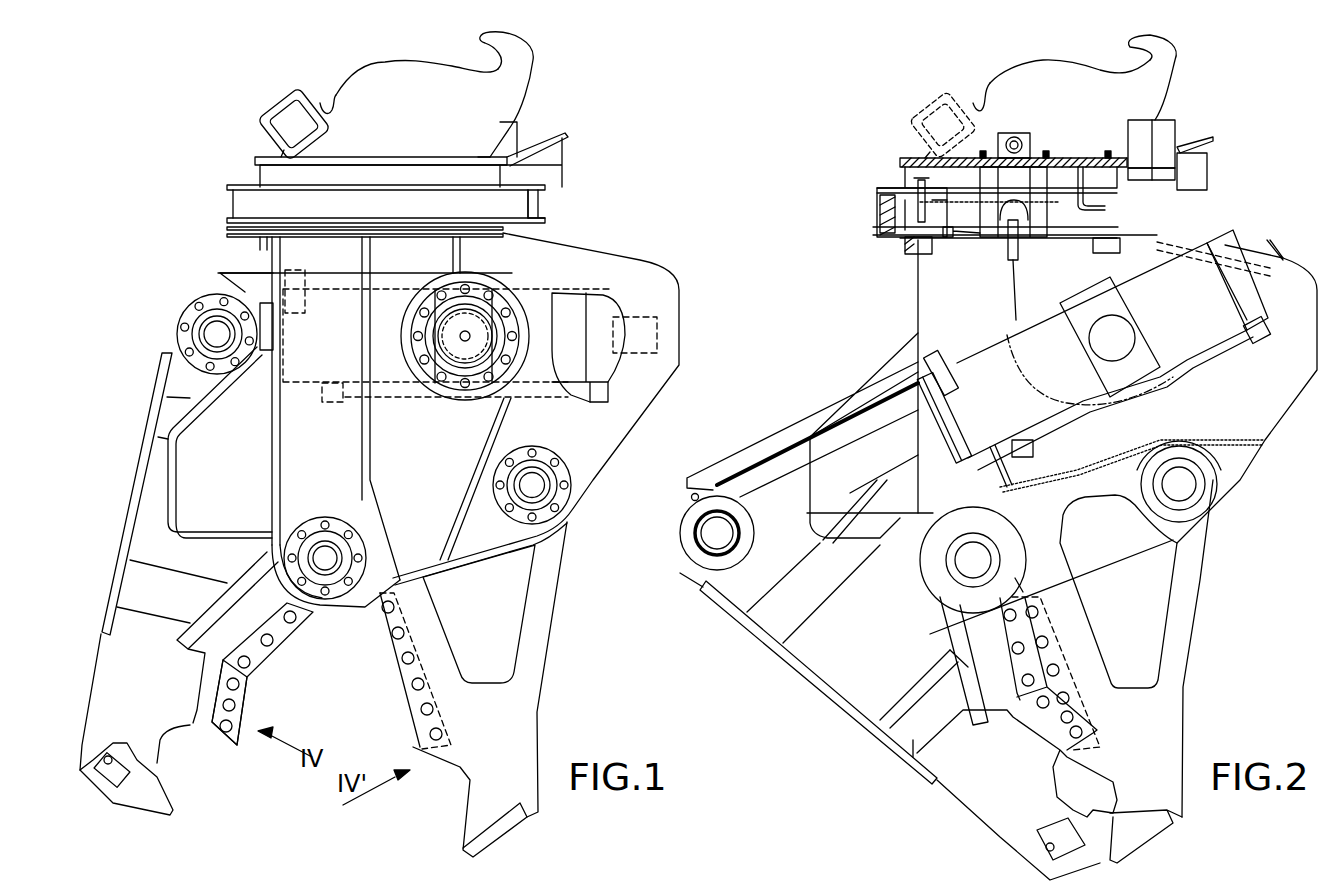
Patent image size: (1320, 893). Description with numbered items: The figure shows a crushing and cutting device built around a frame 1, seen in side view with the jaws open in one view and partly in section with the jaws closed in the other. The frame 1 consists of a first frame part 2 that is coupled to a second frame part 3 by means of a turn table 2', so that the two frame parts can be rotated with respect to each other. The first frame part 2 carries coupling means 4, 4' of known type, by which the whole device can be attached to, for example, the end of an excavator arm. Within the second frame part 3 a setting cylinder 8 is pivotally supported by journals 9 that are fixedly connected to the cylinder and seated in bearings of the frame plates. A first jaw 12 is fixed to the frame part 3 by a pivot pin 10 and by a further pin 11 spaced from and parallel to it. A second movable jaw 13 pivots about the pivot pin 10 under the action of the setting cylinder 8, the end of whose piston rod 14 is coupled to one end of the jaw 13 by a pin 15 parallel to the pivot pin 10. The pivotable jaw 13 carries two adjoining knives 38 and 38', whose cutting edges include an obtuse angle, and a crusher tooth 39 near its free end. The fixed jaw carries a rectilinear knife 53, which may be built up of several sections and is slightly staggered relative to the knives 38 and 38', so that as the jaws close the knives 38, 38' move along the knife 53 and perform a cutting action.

In FIG. 1, the frame 1 is at (214, 172).
In FIG. 2, the frame 1 is at (860, 174).
In FIG. 1, the first frame part 2 is at (397, 145).
In FIG. 2, the first frame part 2 is at (1043, 180).
In FIG. 1, the turn table 2' is at (574, 202).
In FIG. 2, the turn table 2' is at (874, 216).
In FIG. 1, the second frame part 3 is at (563, 260).
In FIG. 2, the second frame part 3 is at (937, 273).
In FIG. 1, the coupling means 4 is at (525, 94).
In FIG. 2, the coupling means 4 is at (1171, 77).
In FIG. 1, the coupling means 4' is at (297, 101).
In FIG. 2, the coupling means 4' is at (945, 100).
In FIG. 1, the setting cylinder 8 is at (597, 340).
In FIG. 2, the setting cylinder 8 is at (1190, 267).
In FIG. 1, the journals 9 is at (465, 336).
In FIG. 2, the journals 9 is at (1112, 338).
In FIG. 1, the pivot pin 10 is at (420, 577).
In FIG. 2, the pivot pin 10 is at (955, 565).
In FIG. 1, the pin 11 is at (566, 523).
In FIG. 2, the pin 11 is at (1195, 482).
In FIG. 2, the first jaw 12 is at (1158, 702).
In FIG. 1, the second movable jaw 13 is at (150, 542).
In FIG. 2, the second movable jaw 13 is at (883, 740).
In FIG. 2, the piston rod 14 is at (785, 493).
In FIG. 1, the pin 15 is at (212, 332).
In FIG. 2, the pin 15 is at (713, 533).
In FIG. 1, the knife 38 is at (269, 674).
In FIG. 1, the knife 38' is at (258, 702).
In FIG. 1, the crusher tooth 39 is at (173, 807).
In FIG. 1, the rectilinear knife 53 is at (400, 695).